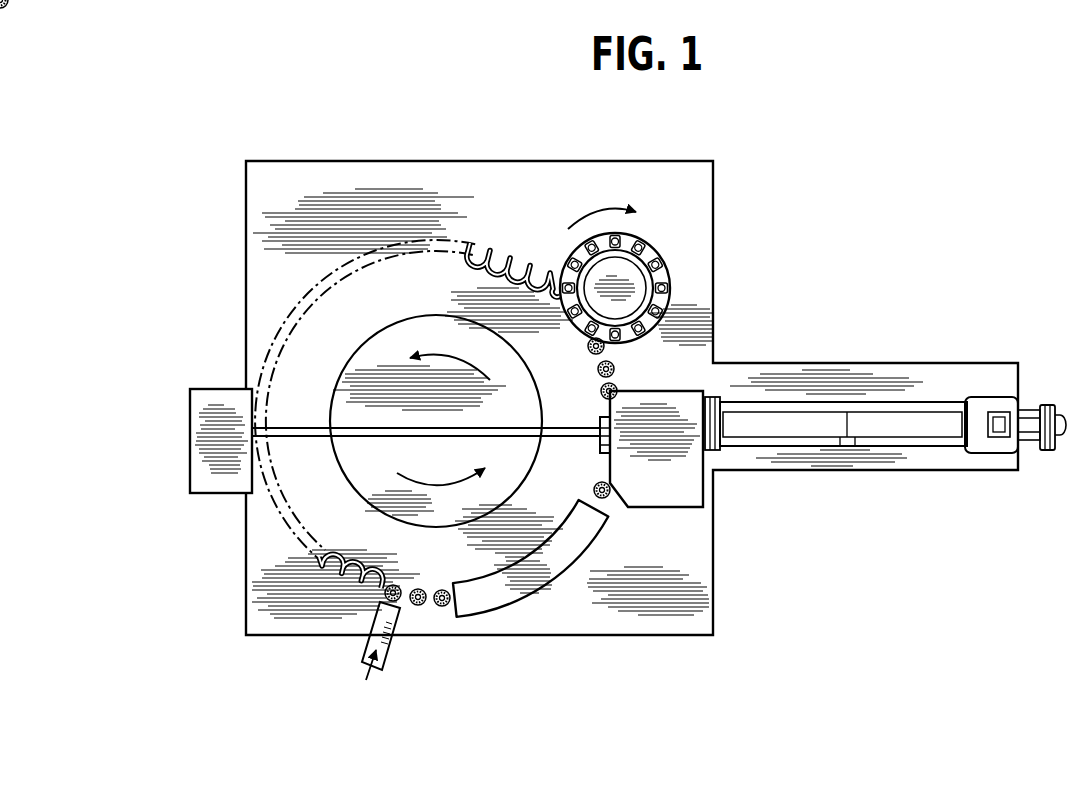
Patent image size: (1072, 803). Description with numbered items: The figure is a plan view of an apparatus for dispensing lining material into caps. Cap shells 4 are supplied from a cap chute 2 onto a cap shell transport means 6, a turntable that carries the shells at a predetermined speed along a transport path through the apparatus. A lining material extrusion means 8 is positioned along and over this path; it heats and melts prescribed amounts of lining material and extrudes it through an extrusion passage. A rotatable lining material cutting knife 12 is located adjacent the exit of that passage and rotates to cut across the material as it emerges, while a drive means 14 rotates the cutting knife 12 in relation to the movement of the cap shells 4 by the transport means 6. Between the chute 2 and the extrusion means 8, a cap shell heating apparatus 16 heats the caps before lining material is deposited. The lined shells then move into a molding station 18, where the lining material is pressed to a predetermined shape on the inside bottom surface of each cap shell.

The cap chute 2 is at (393, 647).
The cap shells 4 is at (617, 385).
The cap shell transport means 6 is at (343, 532).
The lining material extrusion means 8 is at (672, 507).
The lining material cutting knife 12 is at (597, 418).
The drive means 14 is at (190, 416).
The cap shell heating apparatus 16 is at (558, 583).
The molding station 18 is at (657, 243).